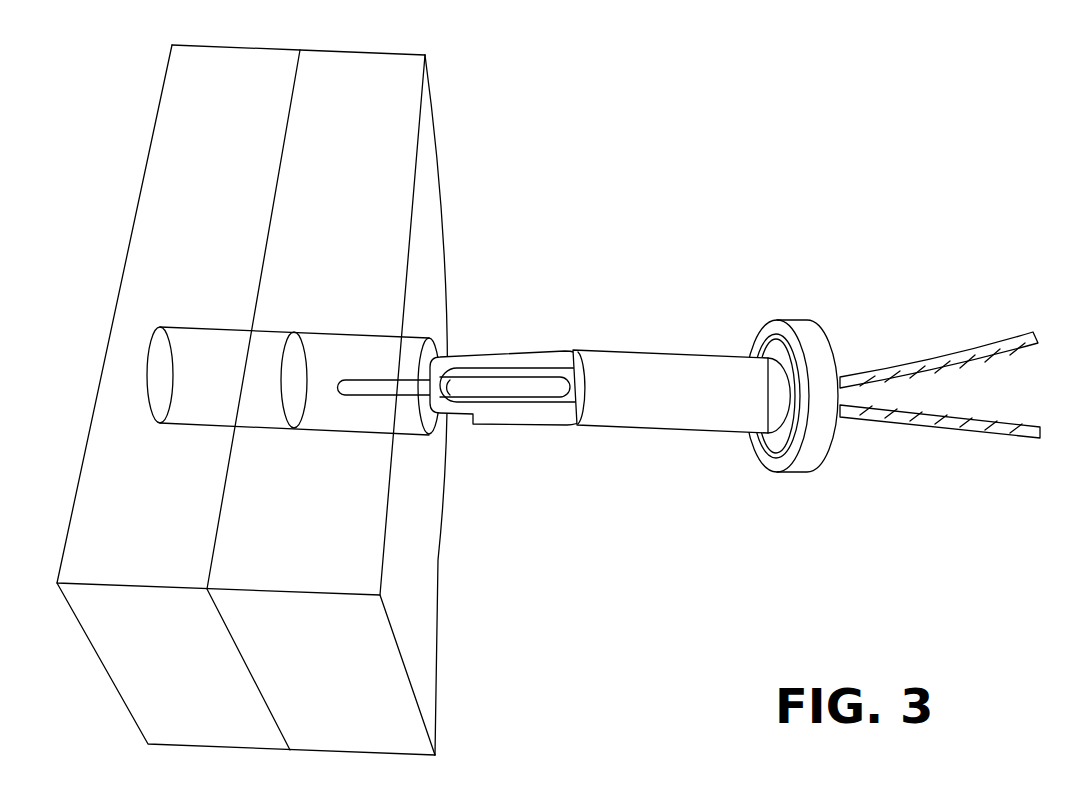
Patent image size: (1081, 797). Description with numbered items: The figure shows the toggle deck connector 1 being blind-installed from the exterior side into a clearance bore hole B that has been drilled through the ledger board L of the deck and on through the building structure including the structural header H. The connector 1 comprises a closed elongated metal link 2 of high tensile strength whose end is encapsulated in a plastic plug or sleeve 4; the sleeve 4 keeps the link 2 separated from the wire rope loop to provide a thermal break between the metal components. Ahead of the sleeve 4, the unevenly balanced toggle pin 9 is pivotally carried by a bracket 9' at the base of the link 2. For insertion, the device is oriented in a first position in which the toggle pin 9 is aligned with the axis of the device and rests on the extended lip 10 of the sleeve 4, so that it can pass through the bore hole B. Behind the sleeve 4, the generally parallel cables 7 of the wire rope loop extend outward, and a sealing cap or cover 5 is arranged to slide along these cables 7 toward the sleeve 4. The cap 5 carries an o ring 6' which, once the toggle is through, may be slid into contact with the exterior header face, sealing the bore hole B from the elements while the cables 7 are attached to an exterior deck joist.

The connector 1 is at (610, 577).
The elongated metal link 2 is at (493, 352).
The plastic plug or sleeve 4 is at (678, 367).
The sealing cap or cover 5 is at (827, 458).
The o ring 6' is at (773, 433).
The cables 7 is at (923, 360).
The toggle pin 9 is at (505, 454).
The bracket 9' is at (408, 455).
The extended lip 10 is at (513, 427).
The bore hole B is at (321, 332).
The structural header H is at (130, 512).
The ledger board L is at (305, 512).